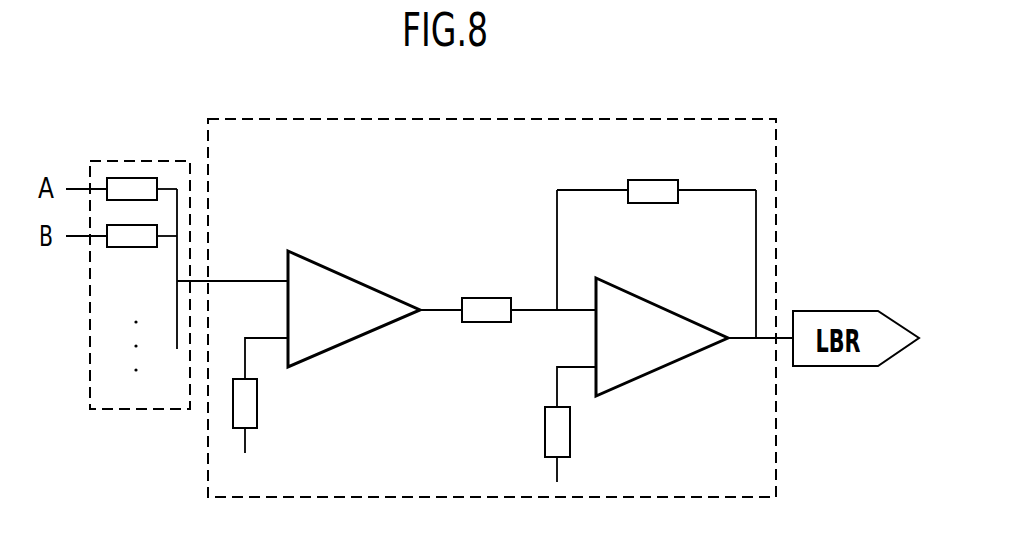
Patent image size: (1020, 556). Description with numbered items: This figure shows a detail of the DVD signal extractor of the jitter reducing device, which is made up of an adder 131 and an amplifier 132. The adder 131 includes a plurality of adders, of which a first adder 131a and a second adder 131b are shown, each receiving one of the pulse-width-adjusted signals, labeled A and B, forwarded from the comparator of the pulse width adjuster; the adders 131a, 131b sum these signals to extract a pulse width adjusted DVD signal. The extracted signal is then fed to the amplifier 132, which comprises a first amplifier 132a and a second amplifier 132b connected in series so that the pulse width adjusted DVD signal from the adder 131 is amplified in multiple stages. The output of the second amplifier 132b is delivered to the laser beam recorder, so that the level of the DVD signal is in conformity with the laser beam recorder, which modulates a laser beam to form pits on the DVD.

The adder 131 is at (137, 409).
The adder 131a is at (133, 178).
The adder 131b is at (133, 247).
The amplifier 132 is at (776, 165).
The first amplifier 132a is at (347, 280).
The second amplifier 132b is at (672, 318).